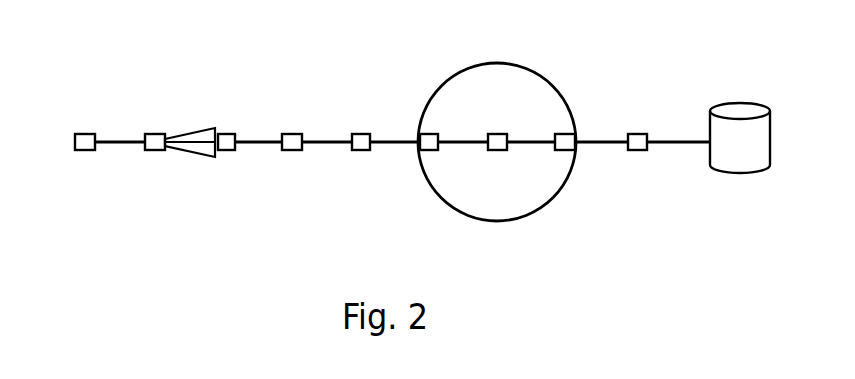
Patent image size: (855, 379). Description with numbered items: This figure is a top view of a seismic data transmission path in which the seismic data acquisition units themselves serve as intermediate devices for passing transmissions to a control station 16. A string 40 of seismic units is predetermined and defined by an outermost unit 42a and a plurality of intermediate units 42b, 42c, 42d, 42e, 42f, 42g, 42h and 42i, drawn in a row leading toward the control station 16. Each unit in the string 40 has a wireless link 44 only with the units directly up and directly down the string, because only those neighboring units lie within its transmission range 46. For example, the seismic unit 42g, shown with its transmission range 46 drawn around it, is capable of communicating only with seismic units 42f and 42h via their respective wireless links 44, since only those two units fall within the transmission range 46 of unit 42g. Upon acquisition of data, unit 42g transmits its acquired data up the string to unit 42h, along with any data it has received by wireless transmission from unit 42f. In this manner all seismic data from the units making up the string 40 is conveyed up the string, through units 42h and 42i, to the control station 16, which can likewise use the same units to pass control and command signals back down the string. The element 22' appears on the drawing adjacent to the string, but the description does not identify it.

The control station 16 is at (748, 167).
The light source 22' is at (166, 118).
The string of seismic units 40 is at (256, 116).
The outermost unit 42a is at (87, 151).
The intermediate unit 42b is at (155, 151).
The intermediate unit 42c is at (226, 151).
The intermediate unit 42d is at (293, 151).
The intermediate unit 42e is at (362, 151).
The intermediate unit 42f is at (428, 151).
The intermediate unit 42g is at (497, 151).
The intermediate unit 42h is at (565, 151).
The intermediate unit 42i is at (638, 151).
The wireless link 44 is at (115, 141).
The transmission range 46 is at (560, 95).